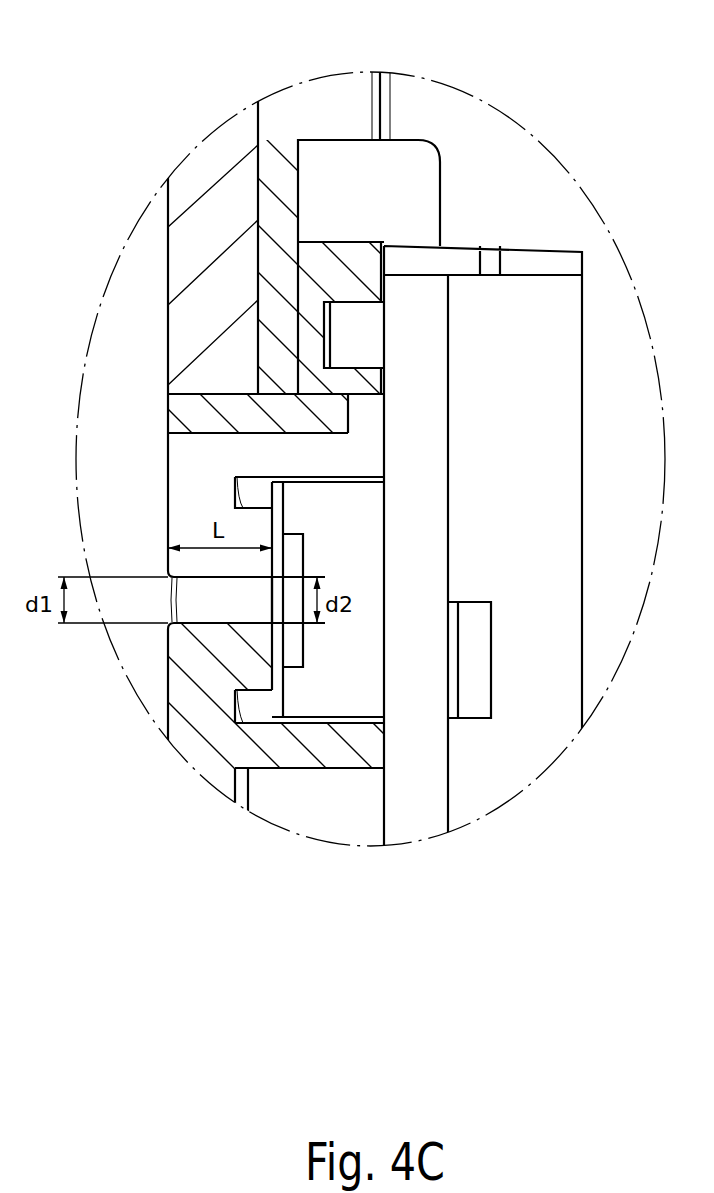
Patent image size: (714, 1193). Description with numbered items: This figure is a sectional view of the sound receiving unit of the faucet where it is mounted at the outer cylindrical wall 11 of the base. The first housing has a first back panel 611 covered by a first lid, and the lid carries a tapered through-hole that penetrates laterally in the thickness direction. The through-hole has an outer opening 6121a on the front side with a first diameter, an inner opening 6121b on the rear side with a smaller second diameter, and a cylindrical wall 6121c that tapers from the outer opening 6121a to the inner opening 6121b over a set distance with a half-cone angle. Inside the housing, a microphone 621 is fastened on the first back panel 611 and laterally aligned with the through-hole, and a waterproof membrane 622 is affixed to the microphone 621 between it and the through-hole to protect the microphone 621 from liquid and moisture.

The outer cylindrical wall 11 is at (215, 250).
The first back panel 611 is at (427, 296).
The microphone 621 is at (320, 698).
The waterproof membrane 622 is at (277, 707).
The outer opening 6121a is at (167, 594).
The inner opening 6121b is at (267, 597).
The cylindrical wall 6121c is at (223, 624).